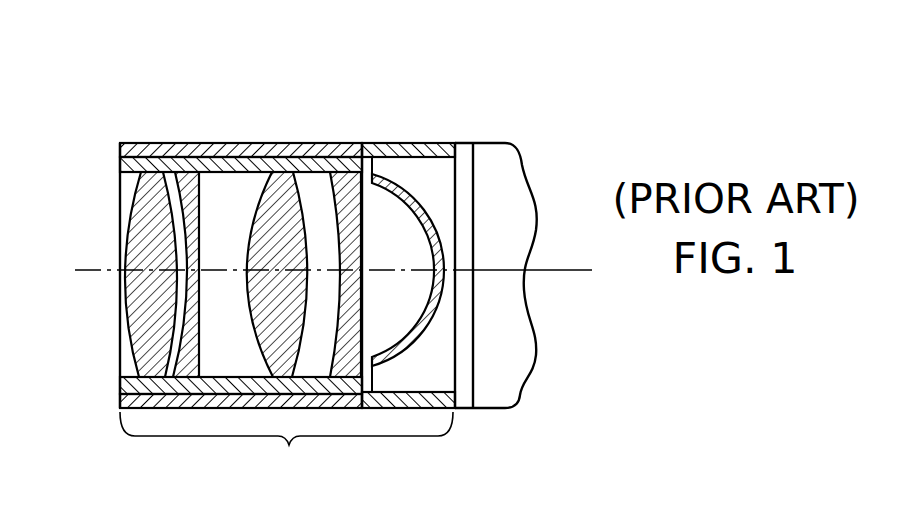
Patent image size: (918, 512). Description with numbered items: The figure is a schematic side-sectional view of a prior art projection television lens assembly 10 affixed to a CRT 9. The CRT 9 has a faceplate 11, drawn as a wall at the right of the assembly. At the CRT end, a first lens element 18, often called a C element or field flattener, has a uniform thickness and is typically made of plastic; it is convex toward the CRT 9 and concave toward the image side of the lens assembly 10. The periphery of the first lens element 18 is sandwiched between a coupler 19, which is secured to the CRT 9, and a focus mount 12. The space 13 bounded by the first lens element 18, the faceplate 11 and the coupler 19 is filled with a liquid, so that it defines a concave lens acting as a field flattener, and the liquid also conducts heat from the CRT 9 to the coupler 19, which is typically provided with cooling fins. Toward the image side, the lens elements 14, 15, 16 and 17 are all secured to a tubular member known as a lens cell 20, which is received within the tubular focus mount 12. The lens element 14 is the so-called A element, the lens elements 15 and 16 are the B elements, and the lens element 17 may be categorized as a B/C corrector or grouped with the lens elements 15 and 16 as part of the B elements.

The CRT 9 is at (534, 378).
The projection television lens assembly 10 is at (286, 449).
The faceplate 11 is at (474, 225).
The focus mount 12 is at (138, 143).
The space 13 is at (423, 193).
The lens element 14 is at (127, 238).
The lens element 15 is at (200, 143).
The lens element 16 is at (269, 230).
The lens element 17 is at (343, 143).
The first lens element 18 is at (409, 195).
The coupler 19 is at (440, 150).
The lens cell 20 is at (300, 143).